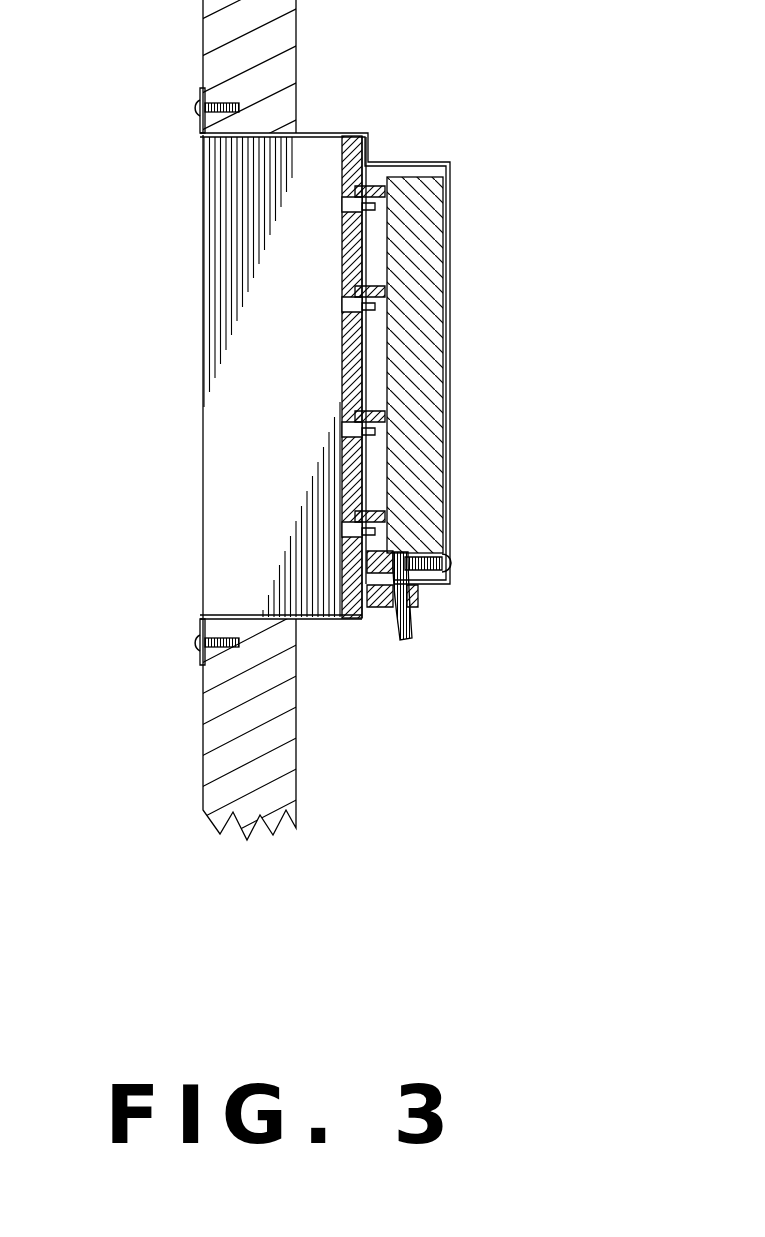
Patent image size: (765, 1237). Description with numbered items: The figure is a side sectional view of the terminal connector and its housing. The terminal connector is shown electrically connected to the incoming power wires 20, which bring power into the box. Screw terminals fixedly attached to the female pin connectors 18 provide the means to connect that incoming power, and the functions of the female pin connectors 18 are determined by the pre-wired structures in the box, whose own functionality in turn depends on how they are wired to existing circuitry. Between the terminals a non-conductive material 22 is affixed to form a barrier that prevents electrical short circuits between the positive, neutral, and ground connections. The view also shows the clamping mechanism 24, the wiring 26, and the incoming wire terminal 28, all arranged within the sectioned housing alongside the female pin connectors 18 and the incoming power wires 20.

The female pin connectors 18 is at (343, 533).
The incoming power wires 20 is at (410, 622).
The non-conductive material 22 is at (357, 273).
The clamping mechanism 24 is at (377, 600).
The wiring 26 is at (425, 433).
The incoming wire terminal 28 is at (380, 287).